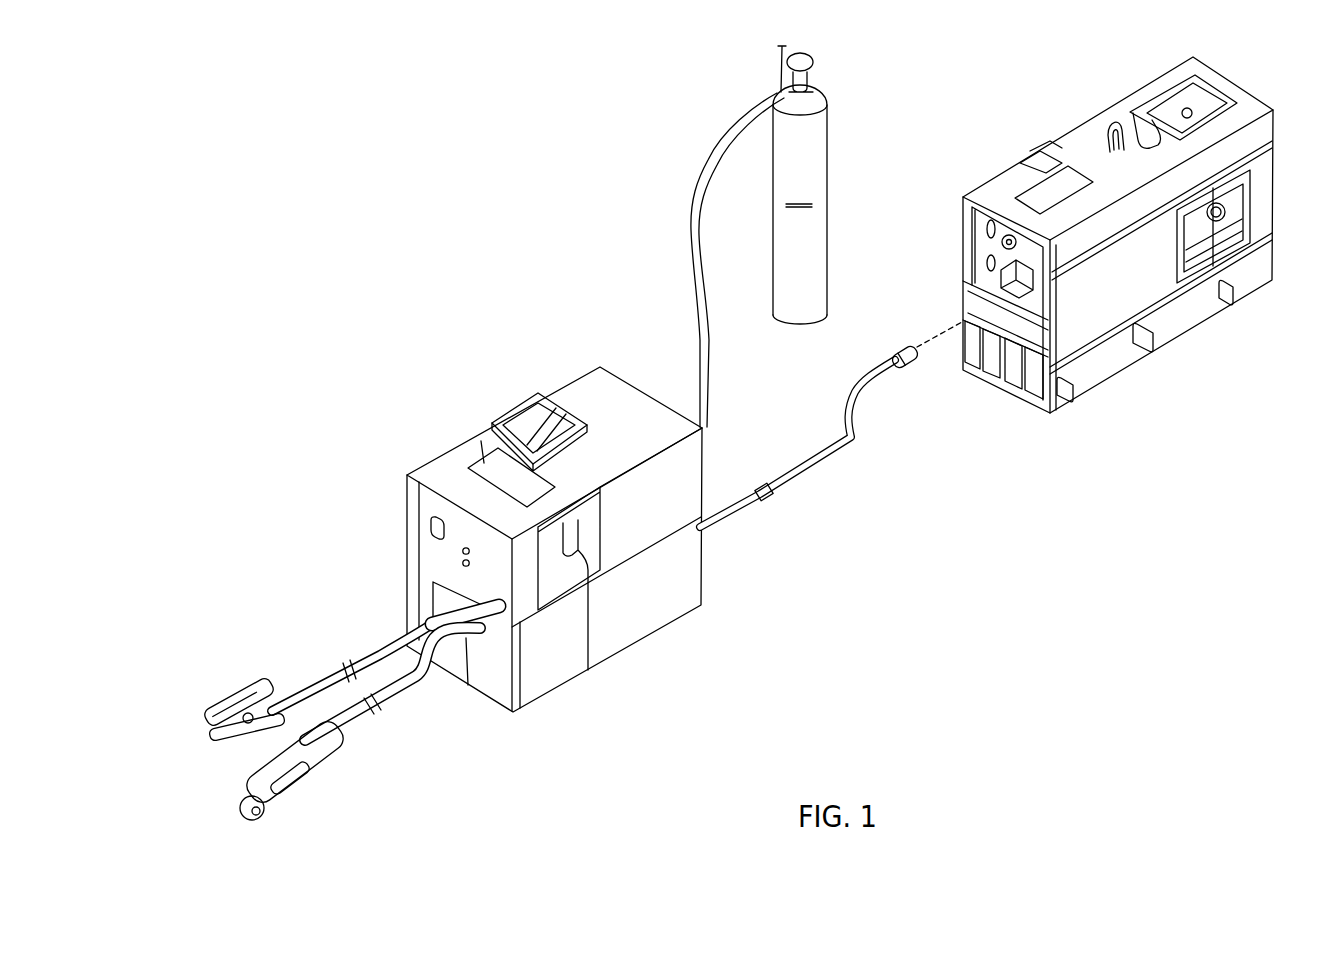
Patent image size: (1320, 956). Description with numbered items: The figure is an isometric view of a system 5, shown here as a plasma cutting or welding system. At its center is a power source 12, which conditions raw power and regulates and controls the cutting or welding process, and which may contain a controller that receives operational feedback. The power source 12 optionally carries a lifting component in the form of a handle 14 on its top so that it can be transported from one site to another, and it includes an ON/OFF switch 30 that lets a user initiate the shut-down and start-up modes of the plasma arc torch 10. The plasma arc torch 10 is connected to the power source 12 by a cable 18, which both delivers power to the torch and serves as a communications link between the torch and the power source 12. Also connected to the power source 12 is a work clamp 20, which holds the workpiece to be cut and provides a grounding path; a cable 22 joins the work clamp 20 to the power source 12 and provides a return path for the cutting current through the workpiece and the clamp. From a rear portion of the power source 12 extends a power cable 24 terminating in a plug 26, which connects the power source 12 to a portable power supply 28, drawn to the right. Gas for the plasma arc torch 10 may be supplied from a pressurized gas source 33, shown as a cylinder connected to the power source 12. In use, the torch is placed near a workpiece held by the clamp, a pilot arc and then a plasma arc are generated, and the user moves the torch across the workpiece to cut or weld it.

The system 5 is at (356, 144).
The plasma arc torch 10 is at (190, 794).
The power source 12 is at (628, 387).
The handle 14 is at (533, 397).
The cable 18 is at (437, 663).
The work clamp 20 is at (231, 690).
The cable 22 is at (316, 681).
The power cable 24 is at (797, 487).
The plug 26 is at (916, 369).
The portable power supply 28 is at (990, 177).
The ON/OFF switch 30 is at (430, 528).
The pressurized gas source 33 is at (759, 236).